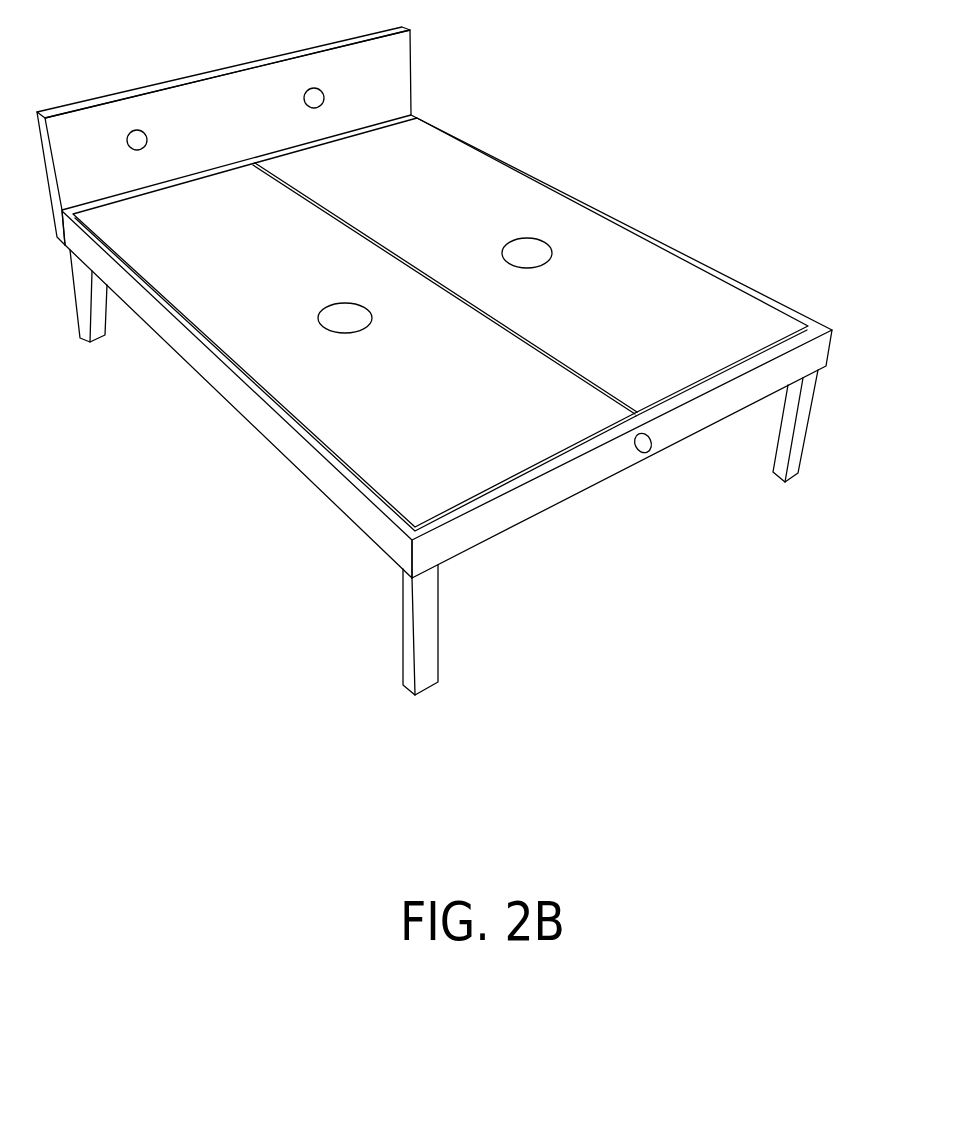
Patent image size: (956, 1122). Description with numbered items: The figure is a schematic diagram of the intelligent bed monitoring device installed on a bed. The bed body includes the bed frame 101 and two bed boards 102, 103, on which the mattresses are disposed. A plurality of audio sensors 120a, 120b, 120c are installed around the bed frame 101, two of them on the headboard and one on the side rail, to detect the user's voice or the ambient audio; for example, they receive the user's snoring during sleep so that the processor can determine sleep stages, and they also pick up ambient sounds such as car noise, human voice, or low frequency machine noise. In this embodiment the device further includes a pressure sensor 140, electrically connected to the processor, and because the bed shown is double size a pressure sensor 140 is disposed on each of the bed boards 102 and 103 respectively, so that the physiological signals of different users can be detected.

The bed frame 101 is at (537, 505).
The bed board 102 is at (628, 253).
The bed board 103 is at (338, 418).
The audio sensor 120a is at (314, 88).
The audio sensor 120b is at (137, 130).
The audio sensor 120c is at (640, 452).
The pressure sensor 140 is at (527, 247).